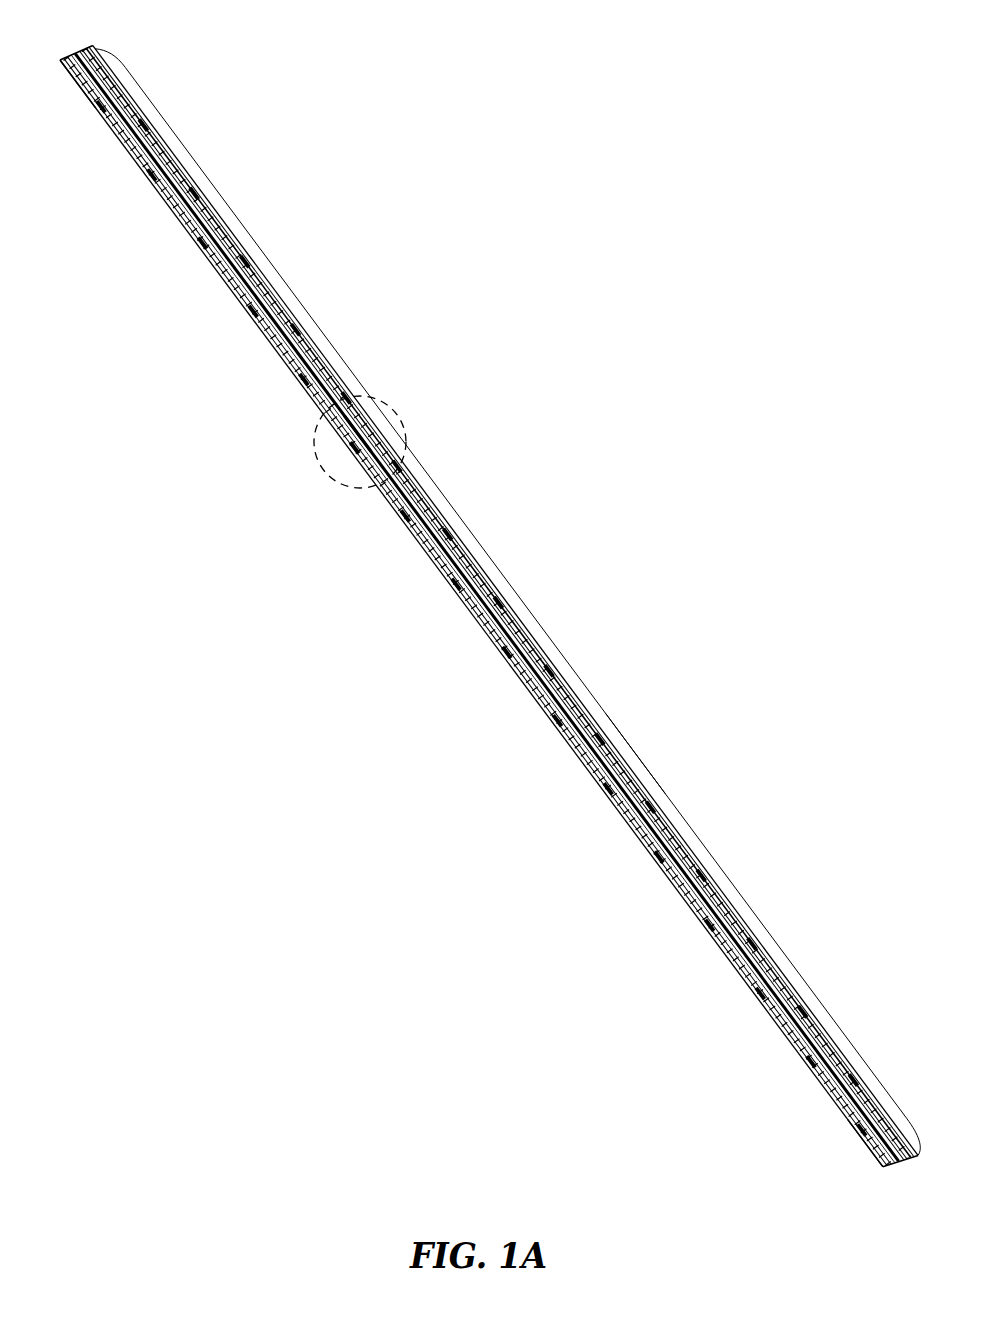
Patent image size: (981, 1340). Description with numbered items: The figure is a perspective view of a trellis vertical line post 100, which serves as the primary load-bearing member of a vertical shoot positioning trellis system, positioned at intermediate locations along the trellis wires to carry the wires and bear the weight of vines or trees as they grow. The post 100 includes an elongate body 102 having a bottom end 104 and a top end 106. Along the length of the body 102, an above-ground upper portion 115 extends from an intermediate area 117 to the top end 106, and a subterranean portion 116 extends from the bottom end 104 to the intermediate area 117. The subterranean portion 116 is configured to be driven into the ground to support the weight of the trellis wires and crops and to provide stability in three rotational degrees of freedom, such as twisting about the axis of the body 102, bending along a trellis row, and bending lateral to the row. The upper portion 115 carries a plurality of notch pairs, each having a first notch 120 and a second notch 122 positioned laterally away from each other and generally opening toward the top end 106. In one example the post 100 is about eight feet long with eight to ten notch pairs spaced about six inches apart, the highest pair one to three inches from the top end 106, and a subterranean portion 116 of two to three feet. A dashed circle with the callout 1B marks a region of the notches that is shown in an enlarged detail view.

The trellis vertical line post 100 is at (665, 446).
The elongate body 102 is at (489, 607).
The bottom end 104 is at (883, 1137).
The top end 106 is at (92, 73).
The upper portion 115 is at (357, 434).
The subterranean portion 116 is at (511, 598).
The intermediate area 117 is at (636, 753).
The first notch 120 is at (354, 447).
The second notch 122 is at (346, 397).
The detail view indicator 1B is at (347, 486).